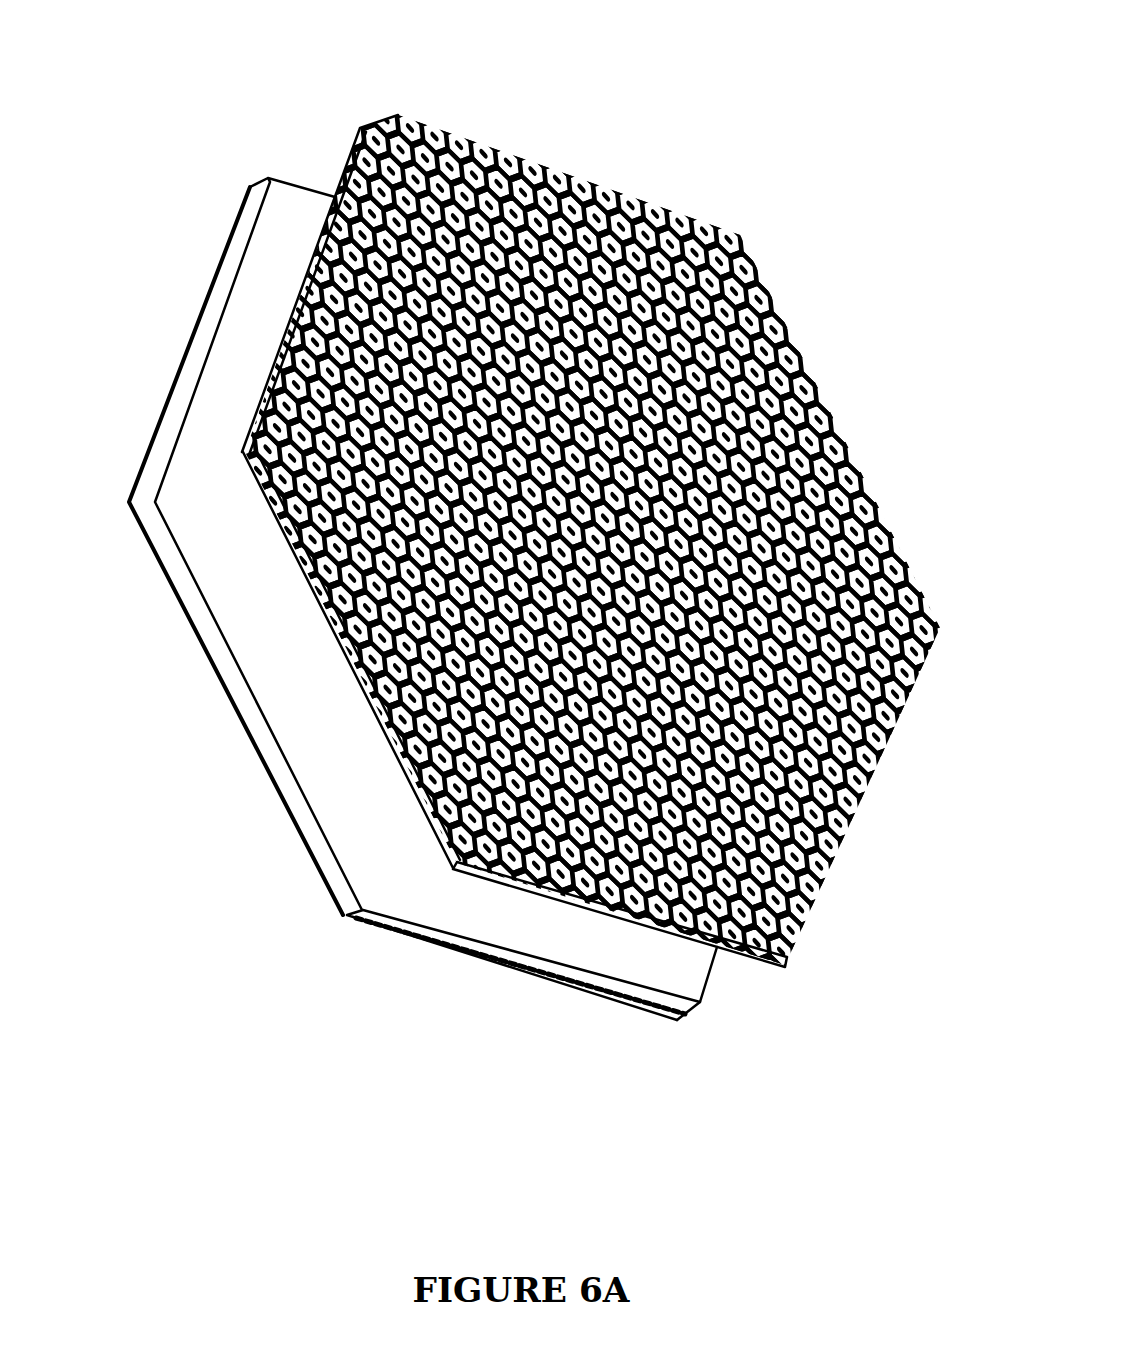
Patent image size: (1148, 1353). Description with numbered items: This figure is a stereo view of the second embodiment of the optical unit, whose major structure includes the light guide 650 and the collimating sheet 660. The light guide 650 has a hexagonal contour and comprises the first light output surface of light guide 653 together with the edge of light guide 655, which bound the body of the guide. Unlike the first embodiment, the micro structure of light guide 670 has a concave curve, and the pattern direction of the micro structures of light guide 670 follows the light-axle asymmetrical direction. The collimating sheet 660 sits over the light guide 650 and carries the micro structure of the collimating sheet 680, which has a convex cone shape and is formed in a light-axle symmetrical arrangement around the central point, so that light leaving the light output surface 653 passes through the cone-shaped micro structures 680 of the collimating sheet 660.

The light guide 650 is at (401, 659).
The first light output surface of light guide 653 is at (240, 590).
The edge of light guide 655 is at (330, 860).
The collimating sheet 660 is at (683, 188).
The micro structure of light guide 670 is at (667, 1020).
The micro structure of the collimating sheet 680 is at (455, 133).